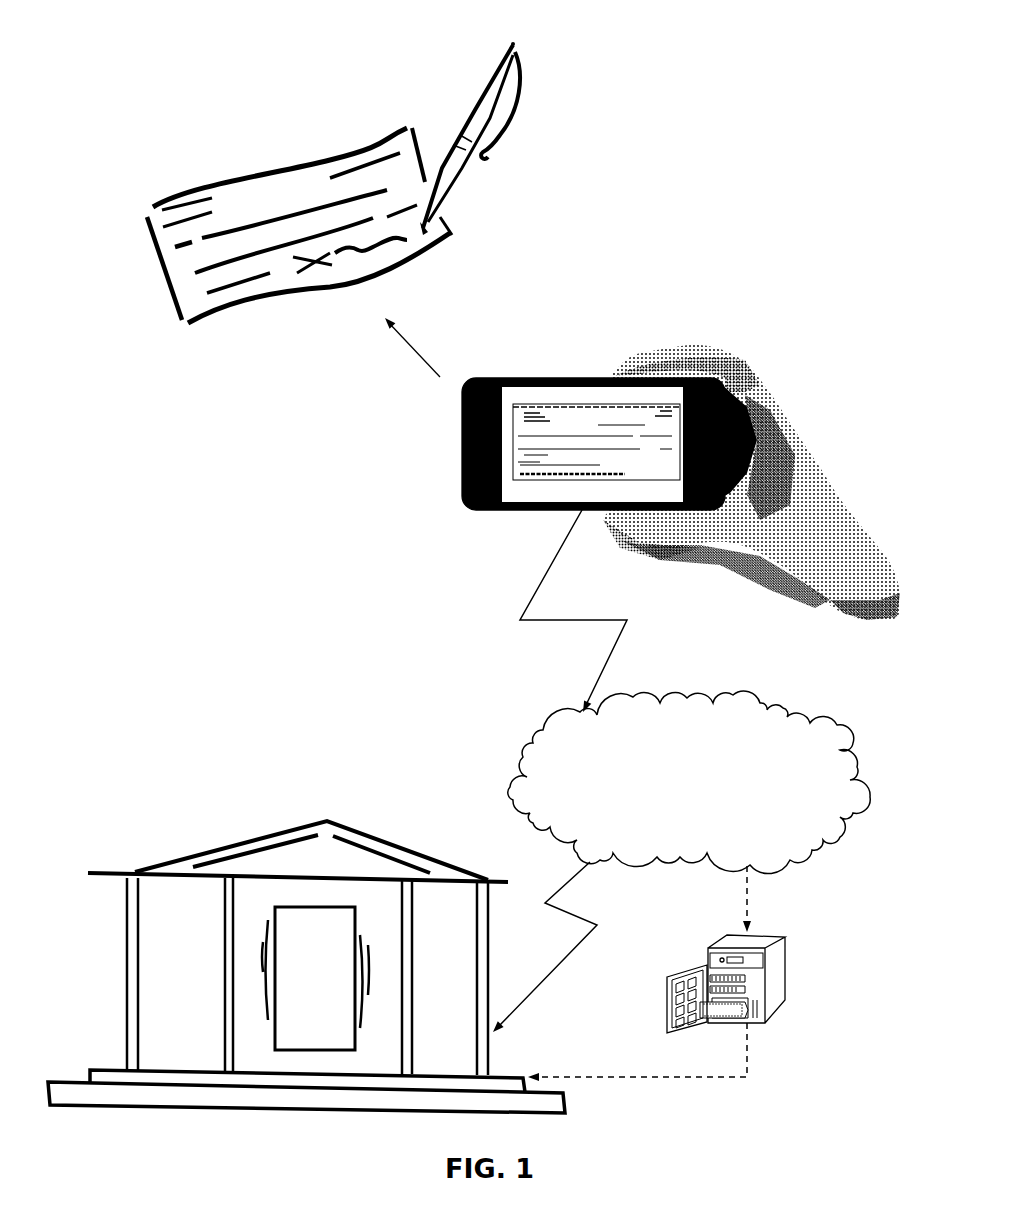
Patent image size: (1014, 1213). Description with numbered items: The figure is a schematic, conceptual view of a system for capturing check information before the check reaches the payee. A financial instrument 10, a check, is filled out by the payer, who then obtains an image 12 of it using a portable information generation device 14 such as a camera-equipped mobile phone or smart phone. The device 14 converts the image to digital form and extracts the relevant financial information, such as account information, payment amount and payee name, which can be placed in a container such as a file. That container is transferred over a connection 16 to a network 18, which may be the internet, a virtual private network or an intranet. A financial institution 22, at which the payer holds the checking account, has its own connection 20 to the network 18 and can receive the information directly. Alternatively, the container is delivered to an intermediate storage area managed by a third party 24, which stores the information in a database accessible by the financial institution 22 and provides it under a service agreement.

The financial instrument 10 is at (178, 193).
The image 12 is at (523, 405).
The information generation device 14 is at (460, 482).
The connection 16 is at (543, 575).
The network 18 is at (681, 808).
The connection 20 is at (547, 987).
The financial institution 22 is at (172, 860).
The third party 24 is at (785, 977).